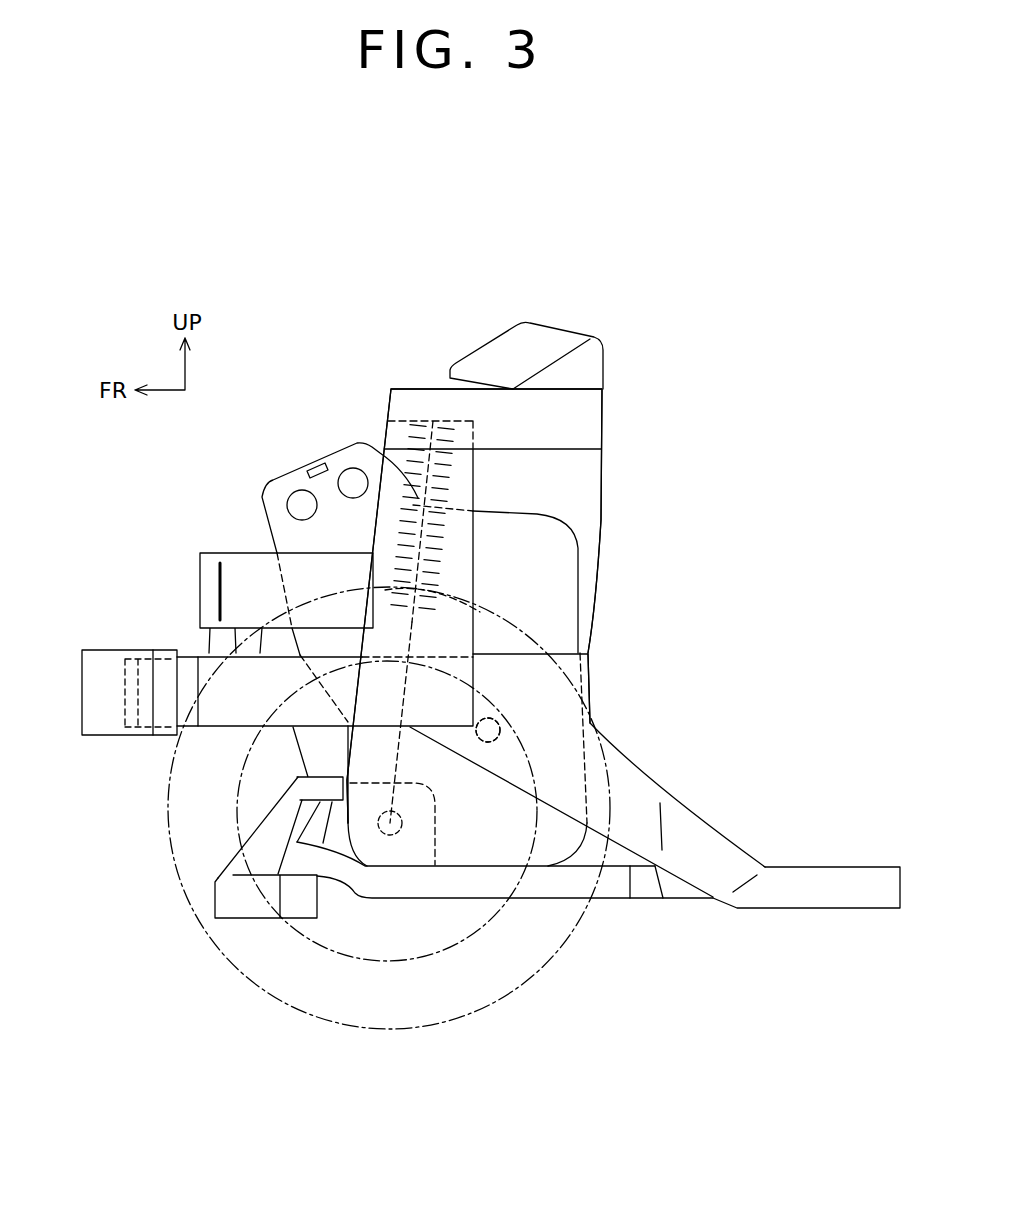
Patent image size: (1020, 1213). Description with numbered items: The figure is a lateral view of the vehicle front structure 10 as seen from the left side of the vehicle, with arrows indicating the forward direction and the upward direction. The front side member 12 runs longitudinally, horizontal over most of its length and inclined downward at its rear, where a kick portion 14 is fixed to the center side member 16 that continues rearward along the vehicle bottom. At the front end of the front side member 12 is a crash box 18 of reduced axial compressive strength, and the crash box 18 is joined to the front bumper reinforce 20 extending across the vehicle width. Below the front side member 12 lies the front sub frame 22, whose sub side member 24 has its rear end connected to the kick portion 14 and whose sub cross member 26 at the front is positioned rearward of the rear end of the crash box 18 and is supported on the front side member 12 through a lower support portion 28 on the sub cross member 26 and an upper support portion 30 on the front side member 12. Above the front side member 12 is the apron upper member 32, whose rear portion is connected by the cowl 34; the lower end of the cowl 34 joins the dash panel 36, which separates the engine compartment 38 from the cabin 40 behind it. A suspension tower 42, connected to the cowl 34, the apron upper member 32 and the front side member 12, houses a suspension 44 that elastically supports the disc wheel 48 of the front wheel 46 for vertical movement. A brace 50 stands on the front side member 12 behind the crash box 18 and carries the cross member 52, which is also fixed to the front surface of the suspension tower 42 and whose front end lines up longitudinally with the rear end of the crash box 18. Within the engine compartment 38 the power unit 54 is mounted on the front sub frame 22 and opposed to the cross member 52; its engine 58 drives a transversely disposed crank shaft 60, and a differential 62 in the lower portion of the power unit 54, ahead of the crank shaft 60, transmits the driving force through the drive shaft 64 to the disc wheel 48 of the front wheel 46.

The vehicle front structure 10 is at (330, 347).
The front side member 12 is at (338, 640).
The kick portion 14 is at (747, 897).
The center side member 16 is at (878, 908).
The crash box 18 is at (188, 663).
The front bumper reinforce 20 is at (82, 697).
The front sub frame 22 is at (426, 913).
The sub side member 24 is at (543, 900).
The sub cross member 26 is at (248, 903).
The lower support portion 28 is at (273, 837).
The upper support portion 30 is at (308, 752).
The apron upper member 32 is at (417, 402).
The cowl 34 is at (533, 338).
The dash panel 36 is at (600, 523).
The engine compartment 38 is at (510, 489).
The cabin 40 is at (717, 501).
The suspension tower 42 is at (473, 537).
The suspension 44 is at (473, 588).
The front wheel 46 is at (167, 800).
The disc wheel 48 is at (470, 955).
The brace 50 is at (223, 642).
The cross member 52 is at (198, 587).
The power unit 54 is at (290, 470).
The engine 58 is at (488, 730).
The crank shaft 60 is at (497, 717).
The differential 62 is at (435, 835).
The drive shaft 64 is at (402, 810).